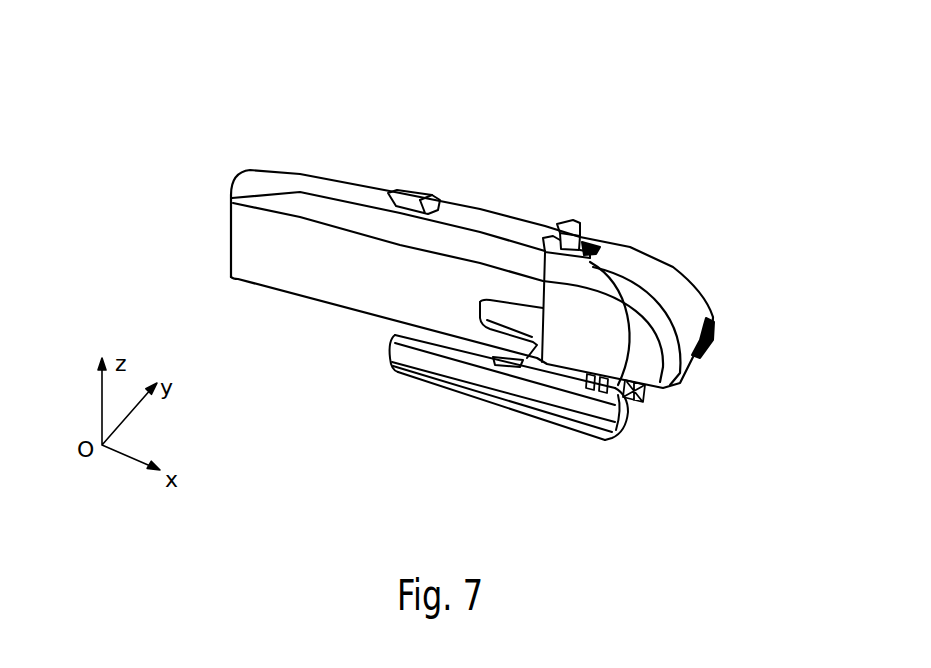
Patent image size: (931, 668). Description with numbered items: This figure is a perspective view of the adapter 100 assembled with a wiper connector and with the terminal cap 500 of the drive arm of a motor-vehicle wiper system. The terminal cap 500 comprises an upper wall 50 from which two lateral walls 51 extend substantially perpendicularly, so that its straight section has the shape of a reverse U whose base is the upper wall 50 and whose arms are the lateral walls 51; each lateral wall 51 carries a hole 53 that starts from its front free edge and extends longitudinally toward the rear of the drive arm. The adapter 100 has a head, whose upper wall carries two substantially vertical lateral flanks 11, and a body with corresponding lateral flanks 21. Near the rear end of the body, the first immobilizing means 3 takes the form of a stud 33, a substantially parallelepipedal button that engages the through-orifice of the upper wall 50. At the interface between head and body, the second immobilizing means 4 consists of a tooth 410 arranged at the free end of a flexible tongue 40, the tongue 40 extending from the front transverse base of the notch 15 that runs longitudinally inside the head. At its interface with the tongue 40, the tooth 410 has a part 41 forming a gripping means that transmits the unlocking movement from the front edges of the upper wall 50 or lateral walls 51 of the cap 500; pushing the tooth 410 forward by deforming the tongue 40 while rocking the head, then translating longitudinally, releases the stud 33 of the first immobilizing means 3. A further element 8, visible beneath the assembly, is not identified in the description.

The terminal cap 500 is at (420, 197).
The upper wall 50 is at (420, 197).
The lateral walls 51 is at (323, 262).
The stud 33 is at (405, 192).
The first immobilizing means 3 is at (427, 189).
The lateral flanks 21 is at (485, 310).
The tooth 410 is at (546, 244).
The part forming a gripping means 41 is at (573, 222).
The second immobilizing means 4 is at (578, 161).
The flexible tongue 40 is at (590, 232).
The adapter 100 is at (640, 240).
The lateral flanks 11 is at (575, 337).
The notch 15 is at (590, 237).
The hole 53 is at (483, 350).
The support bar 8 is at (417, 357).